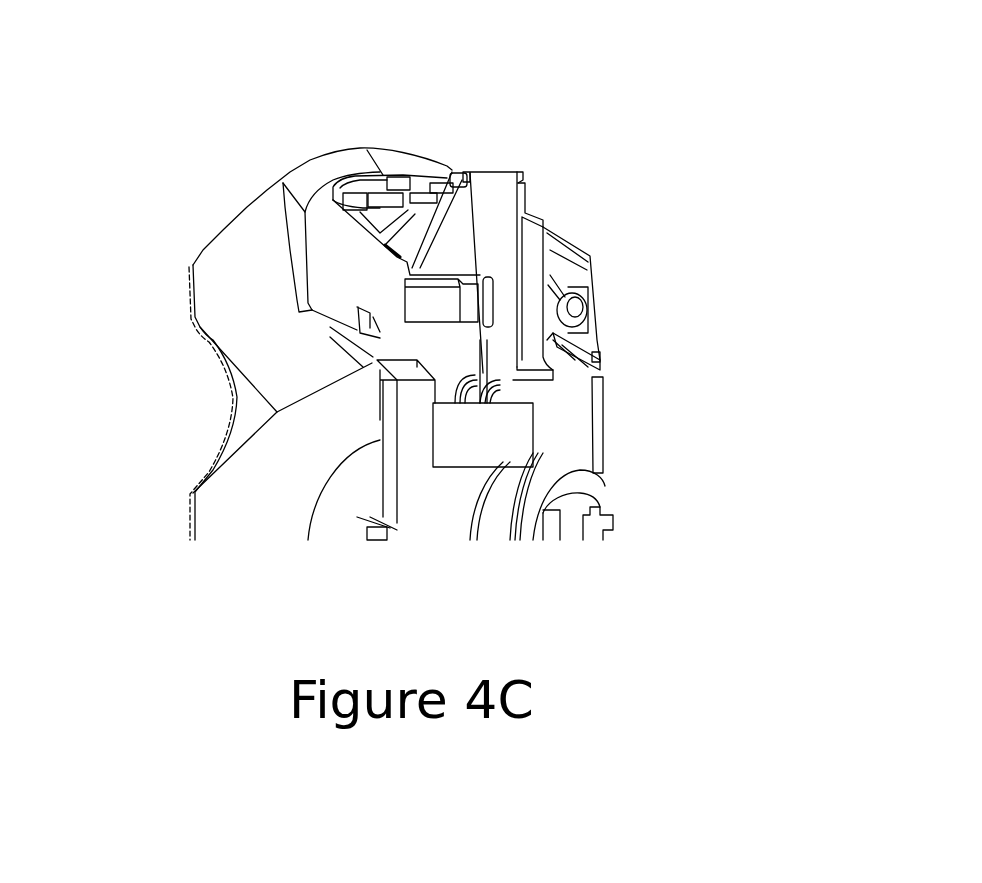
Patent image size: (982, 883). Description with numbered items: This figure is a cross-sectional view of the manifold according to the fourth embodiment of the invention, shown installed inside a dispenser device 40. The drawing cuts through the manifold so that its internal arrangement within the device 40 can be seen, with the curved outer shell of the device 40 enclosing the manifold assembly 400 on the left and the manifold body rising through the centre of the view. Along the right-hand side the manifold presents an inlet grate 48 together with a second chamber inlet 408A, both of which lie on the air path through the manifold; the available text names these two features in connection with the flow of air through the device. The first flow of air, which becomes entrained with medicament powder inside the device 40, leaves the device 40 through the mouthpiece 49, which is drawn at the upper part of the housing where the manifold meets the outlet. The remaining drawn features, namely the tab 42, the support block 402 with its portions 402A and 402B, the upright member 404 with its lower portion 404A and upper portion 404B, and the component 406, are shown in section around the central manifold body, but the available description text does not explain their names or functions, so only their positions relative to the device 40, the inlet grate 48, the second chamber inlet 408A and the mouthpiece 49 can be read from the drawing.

The device 40 is at (259, 221).
The tab 42 is at (364, 321).
The inlet grate 48 is at (600, 357).
The mouthpiece 49 is at (445, 173).
The lever assembly 400 is at (488, 168).
The support block 402 is at (380, 343).
The block top face 402A is at (380, 365).
The spring element 402B is at (460, 385).
The pillar 404 is at (500, 240).
The pillar foot 404A is at (493, 393).
The pillar top 404B is at (500, 178).
The bar 406 is at (485, 305).
The second chamber inlet 408A is at (550, 332).